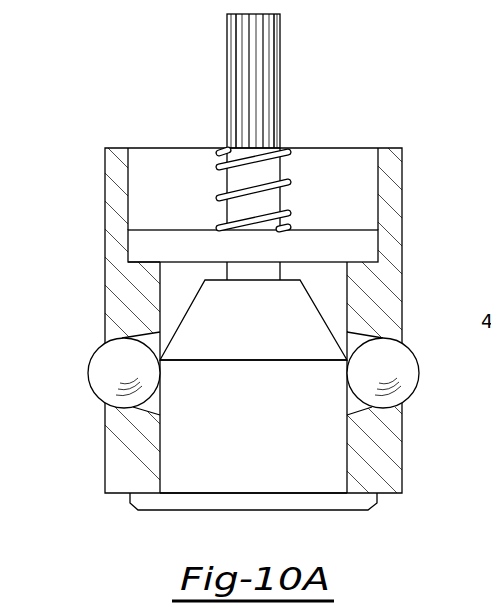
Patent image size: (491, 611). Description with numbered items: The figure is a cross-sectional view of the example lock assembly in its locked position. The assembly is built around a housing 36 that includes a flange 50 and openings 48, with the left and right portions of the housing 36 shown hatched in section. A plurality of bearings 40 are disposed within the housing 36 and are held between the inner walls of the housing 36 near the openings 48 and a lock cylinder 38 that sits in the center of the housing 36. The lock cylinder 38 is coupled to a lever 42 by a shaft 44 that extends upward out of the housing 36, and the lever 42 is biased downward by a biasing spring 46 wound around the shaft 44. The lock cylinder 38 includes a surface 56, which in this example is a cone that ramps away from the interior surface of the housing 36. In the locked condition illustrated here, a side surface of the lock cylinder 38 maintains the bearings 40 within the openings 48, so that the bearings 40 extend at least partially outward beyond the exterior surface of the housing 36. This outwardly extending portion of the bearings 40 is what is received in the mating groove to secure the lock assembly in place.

The housing 36 is at (118, 457).
The lock cylinder 38 is at (243, 433).
The bearings 40 is at (123, 371).
The lever 42 is at (152, 244).
The shaft 44 is at (248, 43).
The biasing spring 46 is at (204, 198).
The openings 48 is at (94, 406).
The flange 50 is at (118, 265).
The surface 56 is at (172, 307).